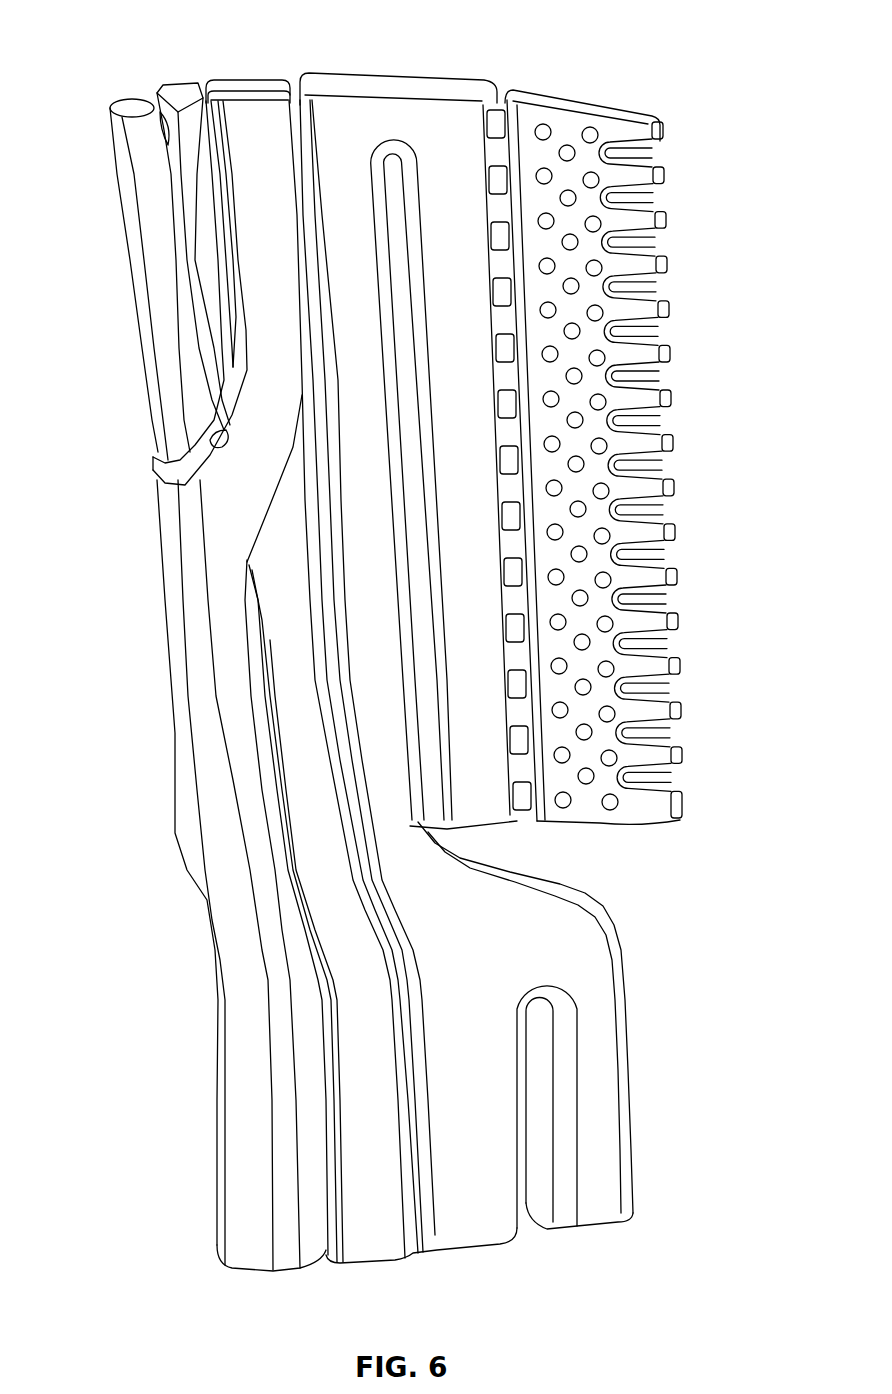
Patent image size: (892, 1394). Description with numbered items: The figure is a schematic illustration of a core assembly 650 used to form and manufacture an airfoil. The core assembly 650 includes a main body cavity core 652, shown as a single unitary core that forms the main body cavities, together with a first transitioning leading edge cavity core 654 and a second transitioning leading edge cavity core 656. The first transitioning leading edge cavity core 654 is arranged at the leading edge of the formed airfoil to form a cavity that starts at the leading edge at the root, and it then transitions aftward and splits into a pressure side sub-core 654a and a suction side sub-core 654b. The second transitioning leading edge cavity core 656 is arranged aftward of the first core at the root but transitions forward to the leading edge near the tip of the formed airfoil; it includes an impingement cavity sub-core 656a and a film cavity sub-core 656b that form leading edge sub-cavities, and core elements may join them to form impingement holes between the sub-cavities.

The core assembly 650 is at (440, 664).
The main body cavity core 652 is at (405, 83).
The first transitioning leading edge cavity core 654 is at (187, 827).
The pressure side sub-core 654a is at (270, 123).
The suction side sub-core 654b is at (248, 80).
The second transitioning leading edge cavity core 656 is at (372, 1243).
The impingement cavity sub-core 656a is at (183, 92).
The film cavity sub-core 656b is at (130, 106).